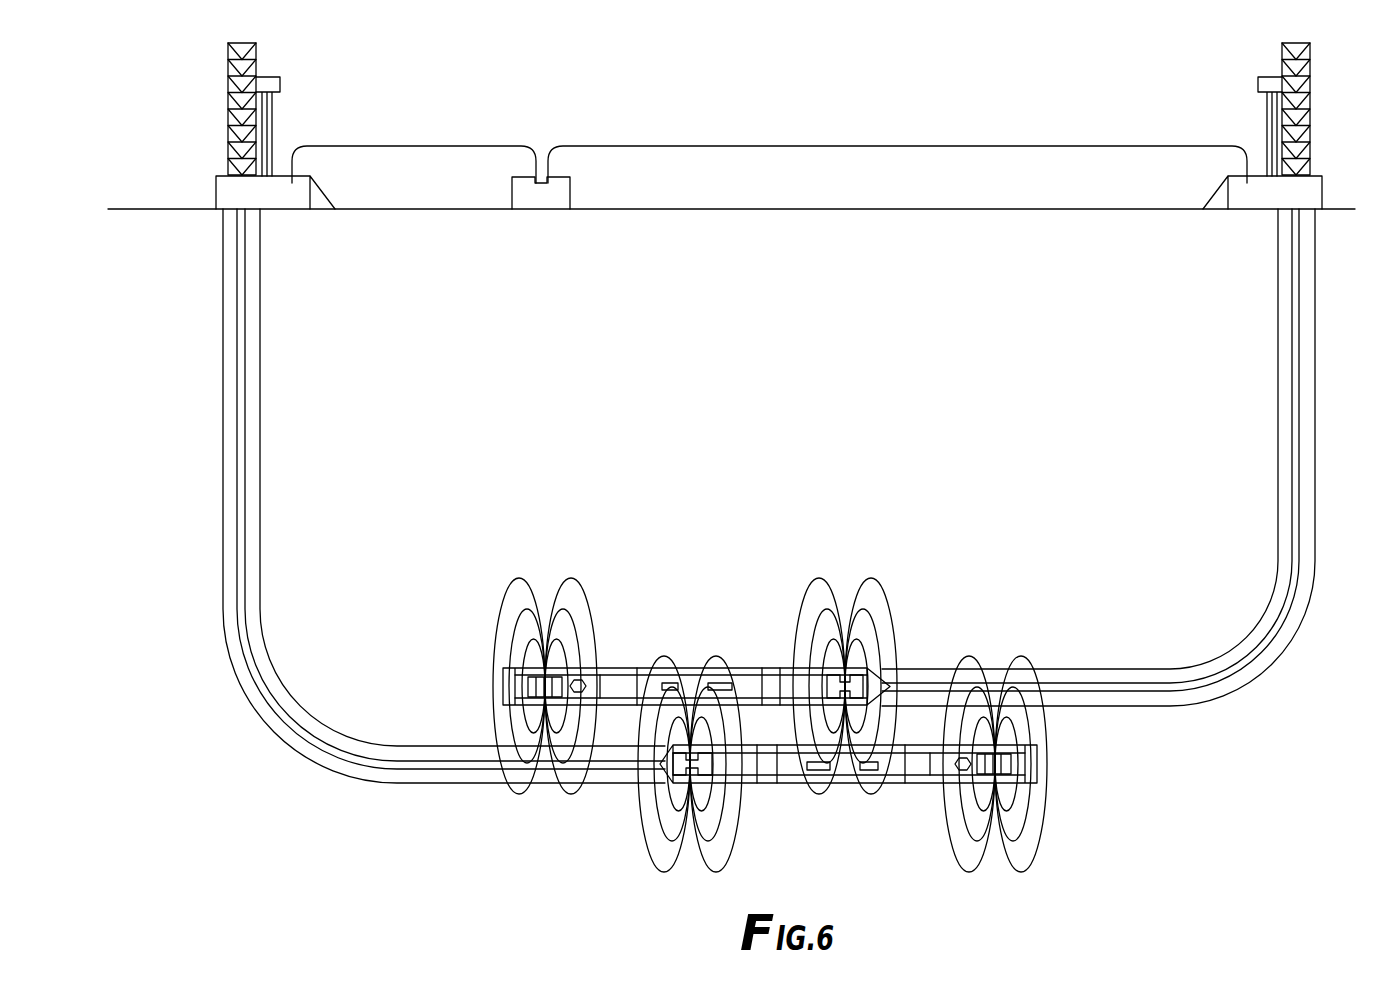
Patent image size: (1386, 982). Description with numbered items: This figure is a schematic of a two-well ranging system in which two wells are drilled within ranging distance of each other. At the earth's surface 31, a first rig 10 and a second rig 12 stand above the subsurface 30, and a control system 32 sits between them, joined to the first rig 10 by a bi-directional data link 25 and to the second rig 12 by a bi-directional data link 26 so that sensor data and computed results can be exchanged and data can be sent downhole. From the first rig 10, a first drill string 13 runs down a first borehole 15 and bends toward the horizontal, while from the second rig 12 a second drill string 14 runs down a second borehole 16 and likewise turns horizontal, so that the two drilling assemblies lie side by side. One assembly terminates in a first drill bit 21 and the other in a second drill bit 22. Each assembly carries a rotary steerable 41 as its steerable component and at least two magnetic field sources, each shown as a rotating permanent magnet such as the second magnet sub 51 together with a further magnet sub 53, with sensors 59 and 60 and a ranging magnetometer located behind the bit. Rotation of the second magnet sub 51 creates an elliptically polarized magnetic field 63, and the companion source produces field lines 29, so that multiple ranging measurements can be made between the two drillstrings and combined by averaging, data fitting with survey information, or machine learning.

The first rig 10 is at (228, 69).
The second rig 12 is at (1310, 71).
The first drill string 13 is at (245, 395).
The second drill string 14 is at (1292, 360).
The first borehole 15 is at (260, 433).
The second borehole 16 is at (1278, 333).
The first drill bit 21 is at (1040, 776).
The second drill bit 22 is at (508, 685).
The bi-directional data link 25 is at (415, 146).
The bi-directional data link 26 is at (657, 146).
The magnetic field lines of coil 29 is at (560, 590).
The subsurface 30 is at (793, 412).
The earth's surface 31 is at (926, 209).
The control system 32 is at (530, 200).
The rotary steerable 41 is at (612, 682).
The second magnet sub 51 is at (850, 685).
The electromagnetic coil 53 is at (548, 680).
The first sensor 59 is at (695, 680).
The second sensor 60 is at (725, 680).
The second elliptically polarized magnetic field 63 is at (817, 580).